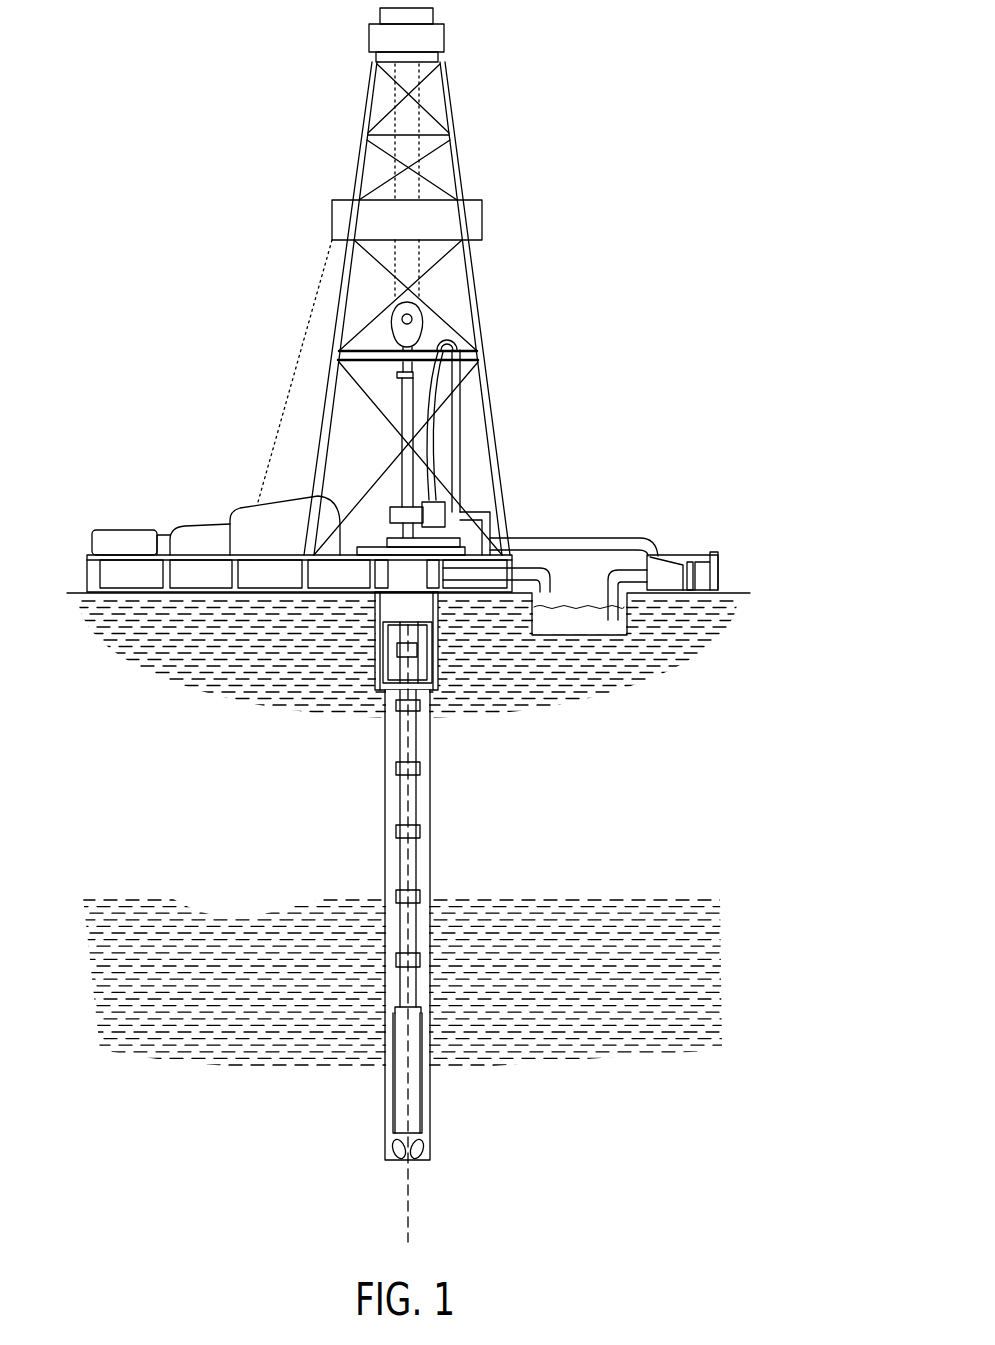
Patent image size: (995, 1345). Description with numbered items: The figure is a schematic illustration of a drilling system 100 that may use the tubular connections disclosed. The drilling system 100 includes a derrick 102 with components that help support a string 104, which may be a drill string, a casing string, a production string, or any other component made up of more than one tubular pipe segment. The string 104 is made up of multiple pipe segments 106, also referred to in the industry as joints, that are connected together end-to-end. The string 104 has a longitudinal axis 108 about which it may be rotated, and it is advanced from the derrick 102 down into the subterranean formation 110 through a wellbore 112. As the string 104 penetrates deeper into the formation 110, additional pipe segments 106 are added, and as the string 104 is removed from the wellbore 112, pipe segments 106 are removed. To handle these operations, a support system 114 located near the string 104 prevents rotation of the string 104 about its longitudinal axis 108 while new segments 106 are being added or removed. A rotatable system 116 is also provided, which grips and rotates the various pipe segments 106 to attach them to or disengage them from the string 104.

The drilling system 100 is at (670, 116).
The derrick 102 is at (455, 119).
The string 104 is at (400, 740).
The pipe segments 106 is at (415, 990).
The longitudinal axis 108 is at (410, 1203).
The subterranean formation 110 is at (657, 743).
The wellbore 112 is at (385, 813).
The support system 114 is at (440, 535).
The rotatable system 116 is at (433, 452).